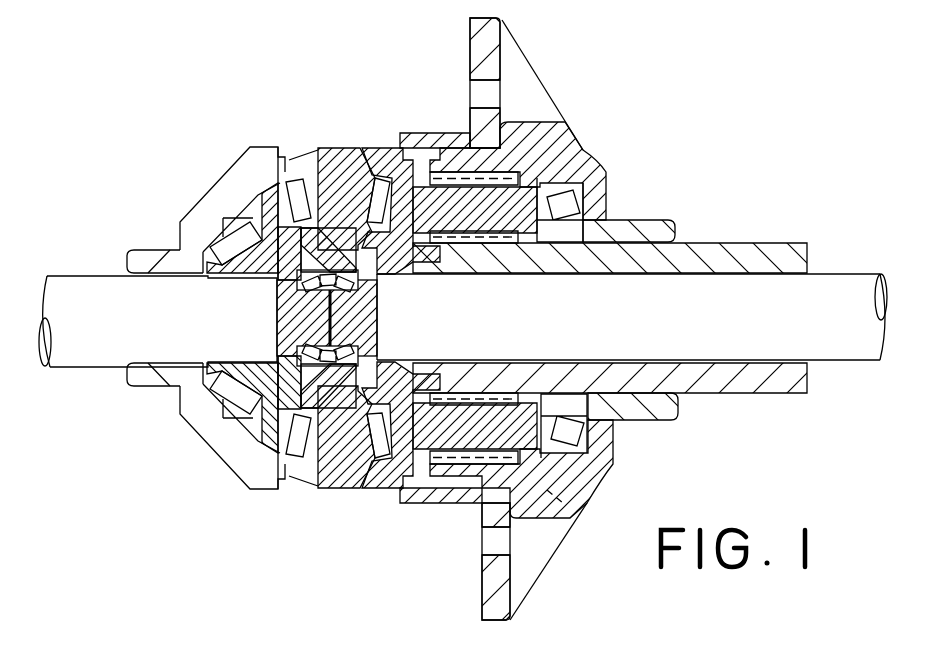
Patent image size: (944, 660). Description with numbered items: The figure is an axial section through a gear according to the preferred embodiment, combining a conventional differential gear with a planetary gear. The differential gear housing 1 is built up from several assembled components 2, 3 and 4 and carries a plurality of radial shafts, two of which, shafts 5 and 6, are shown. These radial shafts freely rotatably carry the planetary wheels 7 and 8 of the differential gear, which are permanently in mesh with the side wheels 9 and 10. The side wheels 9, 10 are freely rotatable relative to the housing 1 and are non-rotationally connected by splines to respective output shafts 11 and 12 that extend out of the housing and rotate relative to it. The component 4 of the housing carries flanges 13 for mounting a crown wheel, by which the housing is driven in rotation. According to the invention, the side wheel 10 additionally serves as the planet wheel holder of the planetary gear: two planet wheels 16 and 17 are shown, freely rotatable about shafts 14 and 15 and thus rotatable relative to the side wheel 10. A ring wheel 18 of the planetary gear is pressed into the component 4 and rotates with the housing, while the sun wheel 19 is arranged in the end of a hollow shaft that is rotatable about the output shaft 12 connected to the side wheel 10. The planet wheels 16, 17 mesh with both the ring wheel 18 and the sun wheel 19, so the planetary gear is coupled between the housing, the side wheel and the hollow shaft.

The housing 1 is at (258, 120).
The component 2 is at (233, 164).
The component 3 is at (385, 148).
The component 4 is at (579, 153).
The radial shaft 5 is at (340, 148).
The radial shaft 6 is at (347, 477).
The planetary wheel 7 is at (298, 180).
The planetary wheel 8 is at (298, 438).
The side wheel 9 is at (280, 212).
The side wheel 10 is at (402, 200).
The output shaft 11 is at (98, 366).
The output shaft 12 is at (832, 345).
The flange 13 is at (499, 30).
The shaft 14 is at (607, 220).
The shaft 15 is at (590, 478).
The planet wheel 16 is at (585, 152).
The planet wheel 17 is at (571, 500).
The ring wheel 18 is at (567, 101).
The sun wheel 19 is at (513, 274).